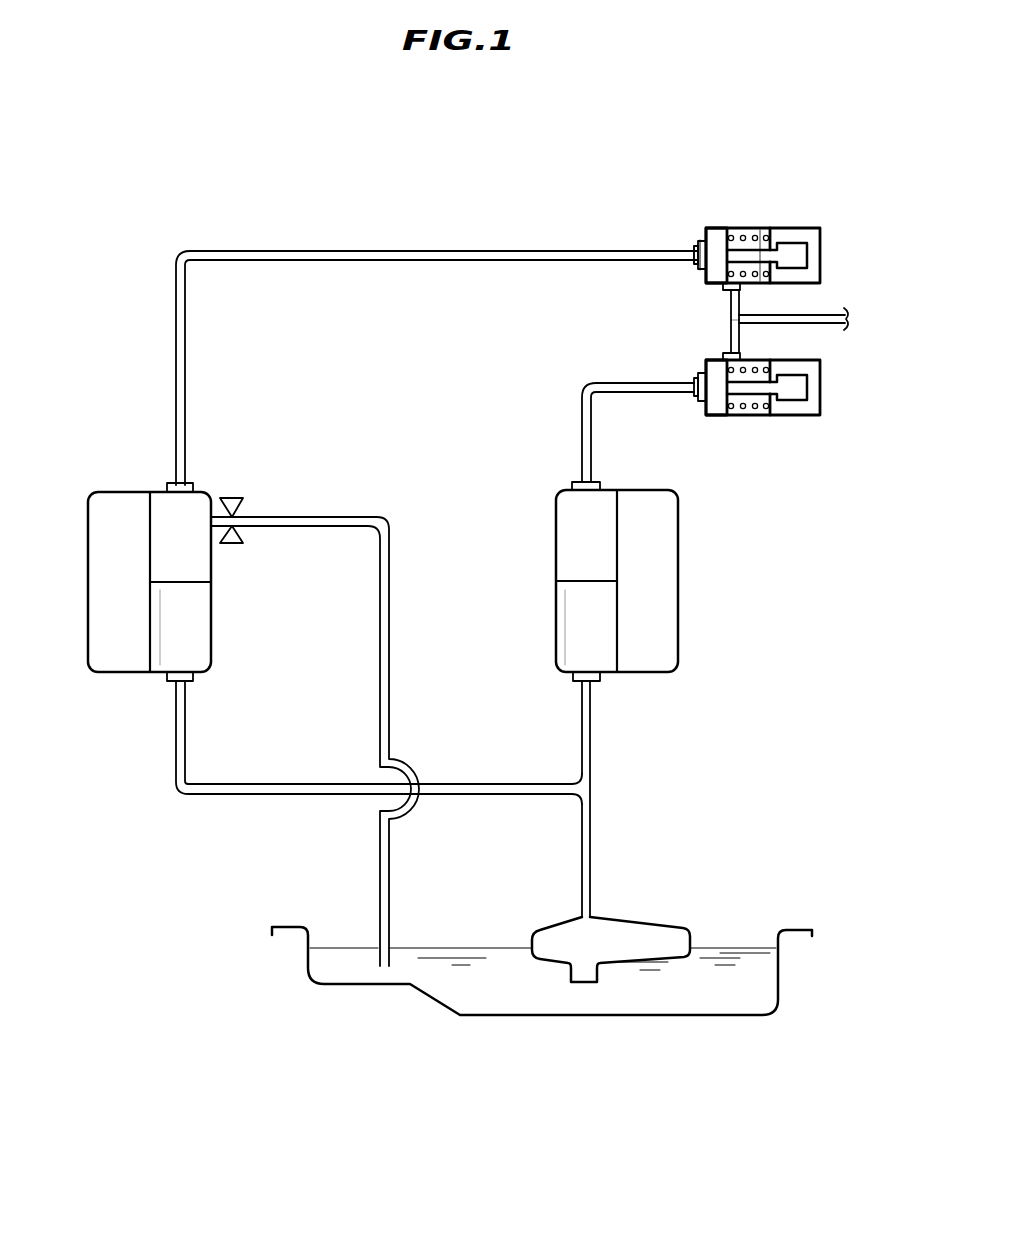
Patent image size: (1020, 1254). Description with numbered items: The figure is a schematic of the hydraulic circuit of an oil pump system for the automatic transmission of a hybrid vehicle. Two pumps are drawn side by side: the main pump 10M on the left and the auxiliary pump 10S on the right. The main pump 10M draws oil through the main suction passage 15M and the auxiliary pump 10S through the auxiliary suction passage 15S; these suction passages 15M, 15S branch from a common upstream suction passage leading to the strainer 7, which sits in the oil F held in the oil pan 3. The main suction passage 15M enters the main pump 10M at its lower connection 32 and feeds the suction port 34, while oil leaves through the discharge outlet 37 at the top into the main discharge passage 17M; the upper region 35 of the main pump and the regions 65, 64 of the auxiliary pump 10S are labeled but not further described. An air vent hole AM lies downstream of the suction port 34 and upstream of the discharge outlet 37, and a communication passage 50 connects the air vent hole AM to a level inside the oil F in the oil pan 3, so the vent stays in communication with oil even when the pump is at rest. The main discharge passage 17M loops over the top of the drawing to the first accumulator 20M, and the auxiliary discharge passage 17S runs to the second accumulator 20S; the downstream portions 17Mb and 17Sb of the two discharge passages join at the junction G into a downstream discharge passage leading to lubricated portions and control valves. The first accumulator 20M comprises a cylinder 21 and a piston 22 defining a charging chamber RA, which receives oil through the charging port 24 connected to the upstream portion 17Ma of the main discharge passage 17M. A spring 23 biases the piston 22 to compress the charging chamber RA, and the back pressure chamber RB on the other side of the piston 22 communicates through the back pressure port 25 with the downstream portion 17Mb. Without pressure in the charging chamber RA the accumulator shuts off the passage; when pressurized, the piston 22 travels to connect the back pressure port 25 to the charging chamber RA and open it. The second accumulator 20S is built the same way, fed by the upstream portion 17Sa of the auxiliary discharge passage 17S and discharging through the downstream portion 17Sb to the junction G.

The main discharge passage 17M is at (283, 250).
The upstream portion of main discharge passage 17Ma is at (462, 247).
The downstream portion of main discharge passage 17Mb is at (731, 310).
The first accumulator 20M is at (755, 217).
The cylinder 21 is at (736, 227).
The piston 22 is at (704, 274).
The spring 23 is at (752, 280).
The charging port 24 is at (694, 246).
The back pressure port 25 is at (722, 287).
The charging chamber RA is at (700, 240).
The back pressure chamber RB is at (760, 229).
The junction G is at (729, 326).
The auxiliary discharge passage 17S is at (578, 429).
The slave-side passage upstream portion 17Sa is at (590, 385).
The downstream portion of auxiliary discharge passage 17Sb is at (740, 346).
The second accumulator 20S is at (790, 452).
The main pump 10M is at (165, 580).
The auxiliary pump 10S is at (587, 624).
The discharge outlet 37 is at (174, 481).
The lower port of master reservoir 32 is at (188, 690).
The upper chamber 35 is at (206, 566).
The suction port 34 is at (206, 620).
The air vent hole AM is at (232, 496).
The communication passage 50 is at (390, 673).
The main suction passage 15M is at (175, 745).
The auxiliary suction passage 15S is at (581, 733).
The upper chamber of slave reservoir 65 is at (560, 540).
The lower chamber of slave reservoir 64 is at (560, 622).
The strainer 7 is at (647, 928).
The oil F is at (498, 962).
The oil pan 3 is at (665, 1018).